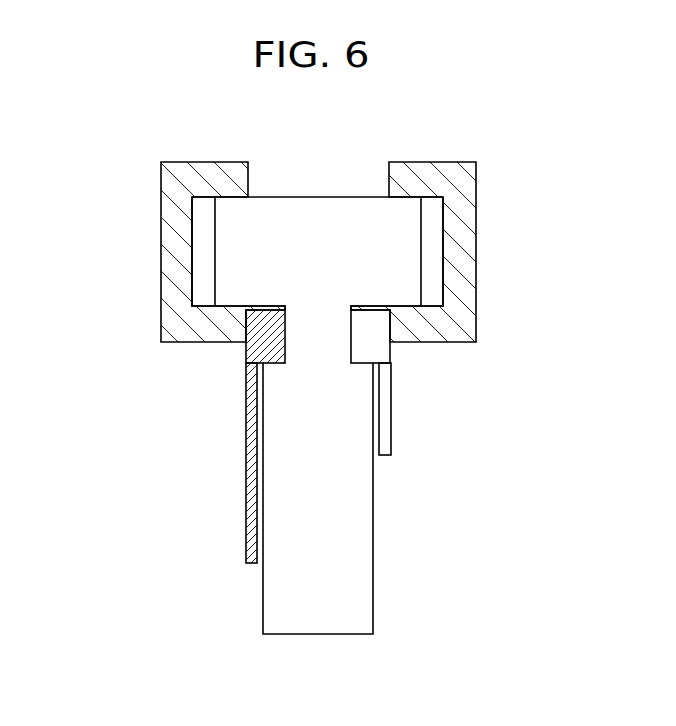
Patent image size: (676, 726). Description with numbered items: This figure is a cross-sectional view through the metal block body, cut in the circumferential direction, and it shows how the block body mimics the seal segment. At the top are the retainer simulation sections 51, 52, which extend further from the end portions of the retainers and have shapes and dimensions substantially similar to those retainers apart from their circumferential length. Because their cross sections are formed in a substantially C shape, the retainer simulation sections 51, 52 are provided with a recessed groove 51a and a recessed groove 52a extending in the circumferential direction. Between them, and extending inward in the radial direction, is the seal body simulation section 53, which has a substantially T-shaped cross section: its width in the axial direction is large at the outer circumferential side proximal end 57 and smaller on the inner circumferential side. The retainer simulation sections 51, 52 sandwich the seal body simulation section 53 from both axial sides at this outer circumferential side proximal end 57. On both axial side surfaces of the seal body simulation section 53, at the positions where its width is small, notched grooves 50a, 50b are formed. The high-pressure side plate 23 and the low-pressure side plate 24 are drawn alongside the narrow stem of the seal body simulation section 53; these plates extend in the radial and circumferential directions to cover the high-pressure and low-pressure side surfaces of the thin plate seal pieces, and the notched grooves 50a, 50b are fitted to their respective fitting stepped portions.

The outer circumferential side proximal end 57 is at (320, 218).
The seal body simulation section 53 is at (384, 520).
The retainer simulation section 51 is at (160, 208).
The retainer simulation section 52 is at (477, 212).
The recessed groove 51a is at (193, 291).
The recessed groove 52a is at (444, 288).
The notched groove 50a is at (246, 360).
The notched groove 50b is at (390, 352).
The high-pressure side plate 23 is at (245, 450).
The low-pressure side plate 24 is at (392, 425).